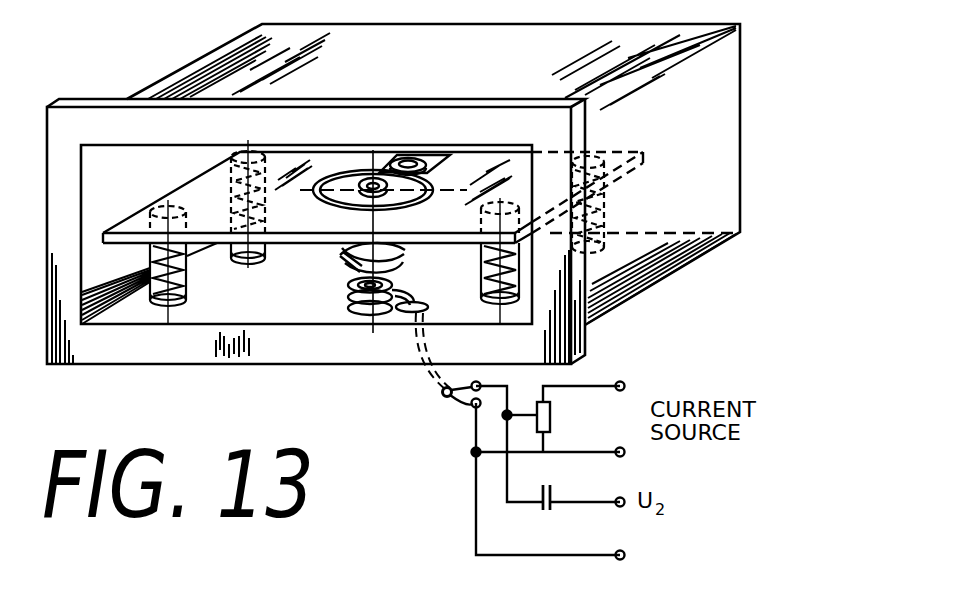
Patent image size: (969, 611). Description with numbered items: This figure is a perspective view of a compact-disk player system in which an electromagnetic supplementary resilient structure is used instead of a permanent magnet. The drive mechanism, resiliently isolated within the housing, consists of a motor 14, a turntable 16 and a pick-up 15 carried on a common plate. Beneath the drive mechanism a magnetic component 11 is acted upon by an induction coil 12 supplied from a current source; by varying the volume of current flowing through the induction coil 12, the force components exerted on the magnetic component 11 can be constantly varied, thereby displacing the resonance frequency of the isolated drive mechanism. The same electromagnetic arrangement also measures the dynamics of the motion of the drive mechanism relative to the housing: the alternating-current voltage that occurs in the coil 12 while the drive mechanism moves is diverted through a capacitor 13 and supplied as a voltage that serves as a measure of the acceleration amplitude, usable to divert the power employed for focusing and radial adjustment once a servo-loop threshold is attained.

The magnetic component 11 is at (350, 272).
The induction coil 12 is at (361, 316).
The capacitor 13 is at (552, 511).
The motor 14 is at (343, 252).
The pick-up 15 is at (412, 158).
The turntable 16 is at (352, 182).